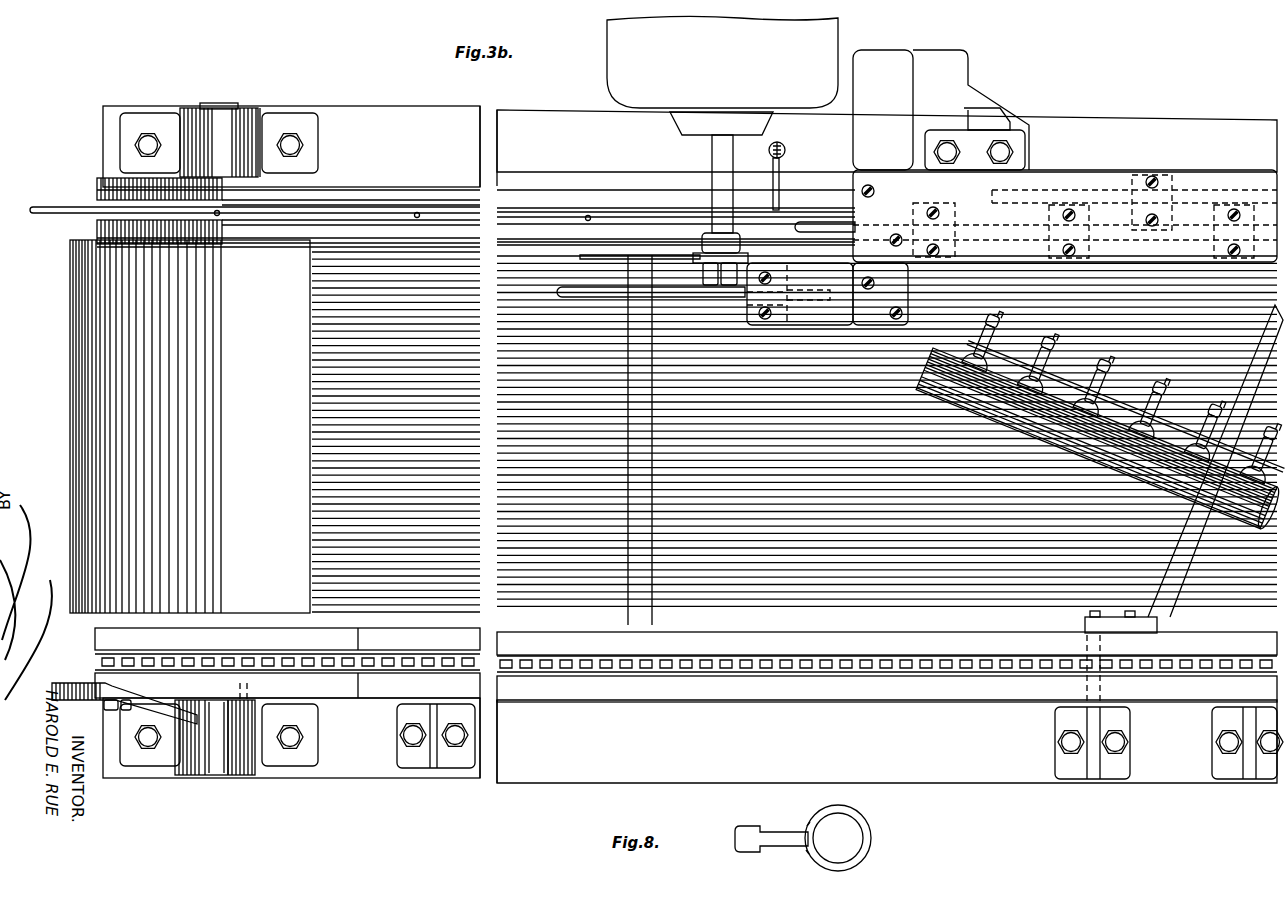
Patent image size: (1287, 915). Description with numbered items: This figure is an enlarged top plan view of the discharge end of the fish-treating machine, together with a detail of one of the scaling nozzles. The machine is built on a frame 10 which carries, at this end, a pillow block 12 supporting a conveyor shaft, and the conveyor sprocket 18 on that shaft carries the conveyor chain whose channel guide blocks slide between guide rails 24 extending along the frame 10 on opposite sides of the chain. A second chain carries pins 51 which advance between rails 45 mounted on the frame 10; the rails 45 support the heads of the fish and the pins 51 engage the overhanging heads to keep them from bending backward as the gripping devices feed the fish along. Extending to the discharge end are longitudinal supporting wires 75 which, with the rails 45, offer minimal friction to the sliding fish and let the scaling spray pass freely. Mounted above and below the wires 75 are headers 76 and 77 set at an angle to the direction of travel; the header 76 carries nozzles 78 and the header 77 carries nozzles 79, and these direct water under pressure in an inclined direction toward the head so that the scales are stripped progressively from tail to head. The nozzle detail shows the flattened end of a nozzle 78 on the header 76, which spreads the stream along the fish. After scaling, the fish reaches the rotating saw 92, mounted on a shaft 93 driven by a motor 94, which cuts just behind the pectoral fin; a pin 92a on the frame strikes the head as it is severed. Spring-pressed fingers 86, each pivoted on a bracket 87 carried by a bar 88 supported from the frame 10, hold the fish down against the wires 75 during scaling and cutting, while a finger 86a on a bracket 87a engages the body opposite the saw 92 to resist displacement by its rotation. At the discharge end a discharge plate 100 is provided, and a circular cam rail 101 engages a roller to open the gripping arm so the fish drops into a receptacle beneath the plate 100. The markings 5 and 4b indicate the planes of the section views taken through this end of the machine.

In FIG. 3B, the frame 10 is at (1094, 117).
In FIG. 3B, the pillow block 12 is at (257, 118).
In FIG. 3B, the section line 5 is at (232, 87).
In FIG. 3B, the rails 45 is at (536, 219).
In FIG. 3B, the pins 51 is at (58, 197).
In FIG. 3B, the discharge plate 100 is at (72, 334).
In FIG. 3B, the section line 4b is at (54, 462).
In FIG. 3B, the longitudinal supporting wires 75 is at (476, 292).
In FIG. 3B, the guide rails 24 is at (770, 680).
In FIG. 3B, the conveyor sprocket 18 is at (100, 658).
In FIG. 3B, the circular cam rail 101 is at (97, 700).
In FIG. 3B, the motor 94 is at (836, 40).
In FIG. 3B, the shaft 93 is at (735, 164).
In FIG. 3B, the pin 92a is at (781, 172).
In FIG. 3B, the spring-pressed fingers 86 is at (814, 226).
In FIG. 3B, the rotating saw 92 is at (634, 252).
In FIG. 3B, the finger 86a is at (562, 287).
In FIG. 3B, the bracket 87a is at (800, 294).
In FIG. 3B, the bracket 87 is at (1143, 175).
In FIG. 3B, the bar 88 is at (1197, 178).
In FIG. 3B, the header 76 is at (1101, 387).
In FIG. 8, the header 76 is at (862, 830).
In FIG. 3B, the nozzles 78 is at (1114, 433).
In FIG. 8, the nozzles 78 is at (752, 848).
In FIG. 3B, the header 77 is at (1113, 390).
In FIG. 3B, the nozzles 79 is at (1063, 333).